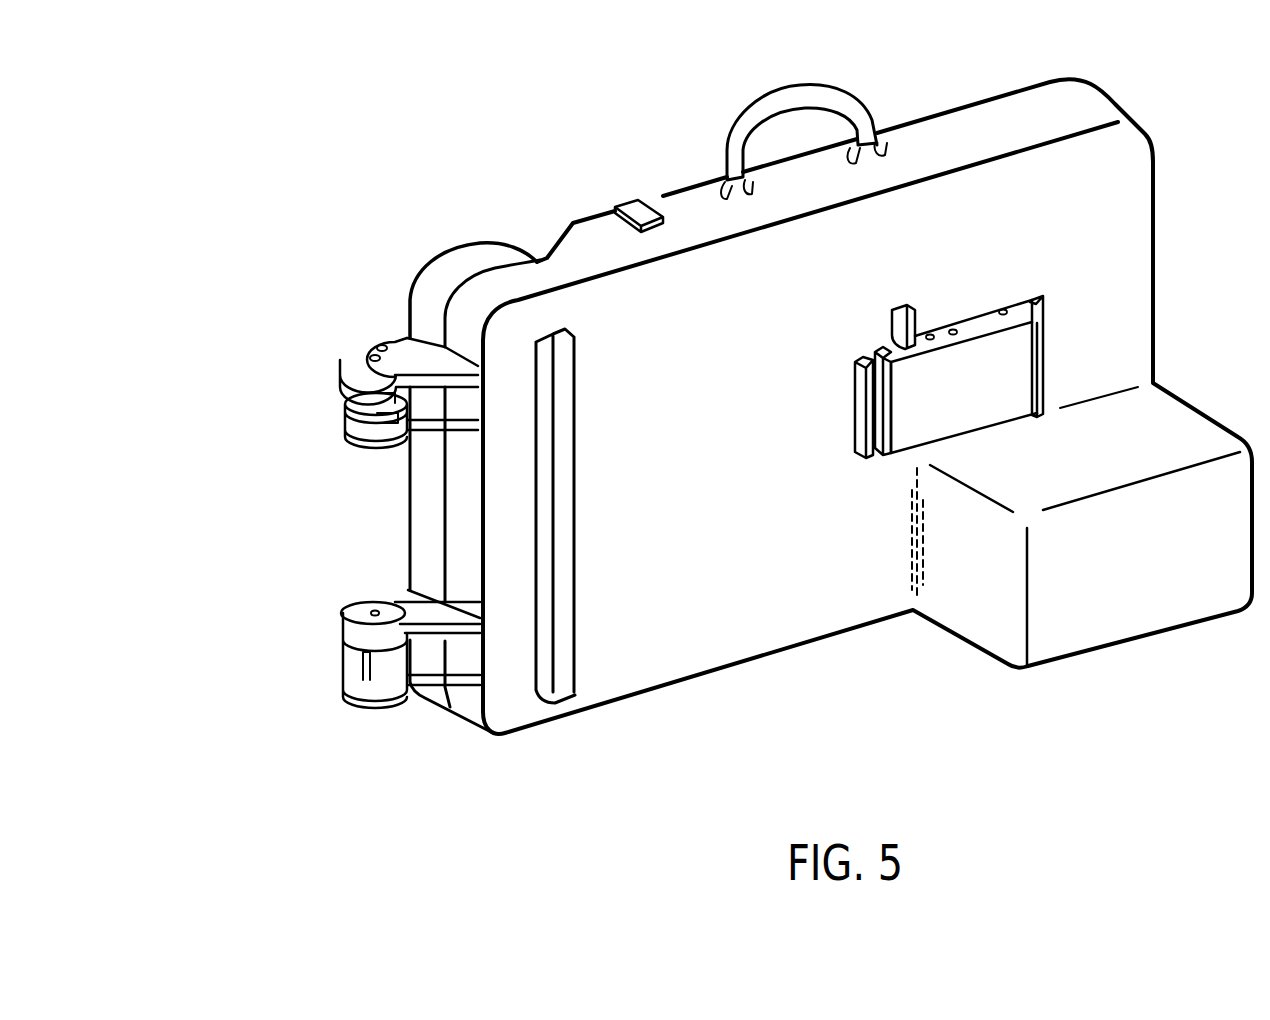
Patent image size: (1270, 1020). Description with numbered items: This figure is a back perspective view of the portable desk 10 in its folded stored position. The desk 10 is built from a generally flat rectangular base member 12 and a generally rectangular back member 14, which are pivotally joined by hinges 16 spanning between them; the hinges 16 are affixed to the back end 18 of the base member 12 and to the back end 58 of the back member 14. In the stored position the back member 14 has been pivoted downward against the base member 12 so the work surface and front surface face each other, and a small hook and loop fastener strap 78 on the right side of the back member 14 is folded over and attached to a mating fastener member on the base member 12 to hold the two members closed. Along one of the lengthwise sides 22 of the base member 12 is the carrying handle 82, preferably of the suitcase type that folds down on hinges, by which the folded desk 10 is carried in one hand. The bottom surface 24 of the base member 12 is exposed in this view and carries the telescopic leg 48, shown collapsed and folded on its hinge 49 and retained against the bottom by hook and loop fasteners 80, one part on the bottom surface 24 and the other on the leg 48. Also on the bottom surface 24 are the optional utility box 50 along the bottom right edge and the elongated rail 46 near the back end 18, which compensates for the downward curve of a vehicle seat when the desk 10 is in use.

The portable desk 10 is at (310, 252).
The base member 12 is at (750, 620).
The back member 14 is at (468, 270).
The hinges 16 is at (343, 657).
The back end 18 is at (463, 555).
The lengthwise sides 22 is at (963, 132).
The bottom surface 24 is at (1117, 188).
The elongated rail 46 is at (563, 683).
The telescopic leg 48 is at (985, 370).
The hinge 49 is at (1047, 327).
The utility box 50 is at (1163, 610).
The back end 58 is at (420, 523).
The hook and loop fastener strap 78 is at (641, 203).
The hook and loop fasteners 80 is at (905, 322).
The carrying handle 82 is at (783, 90).